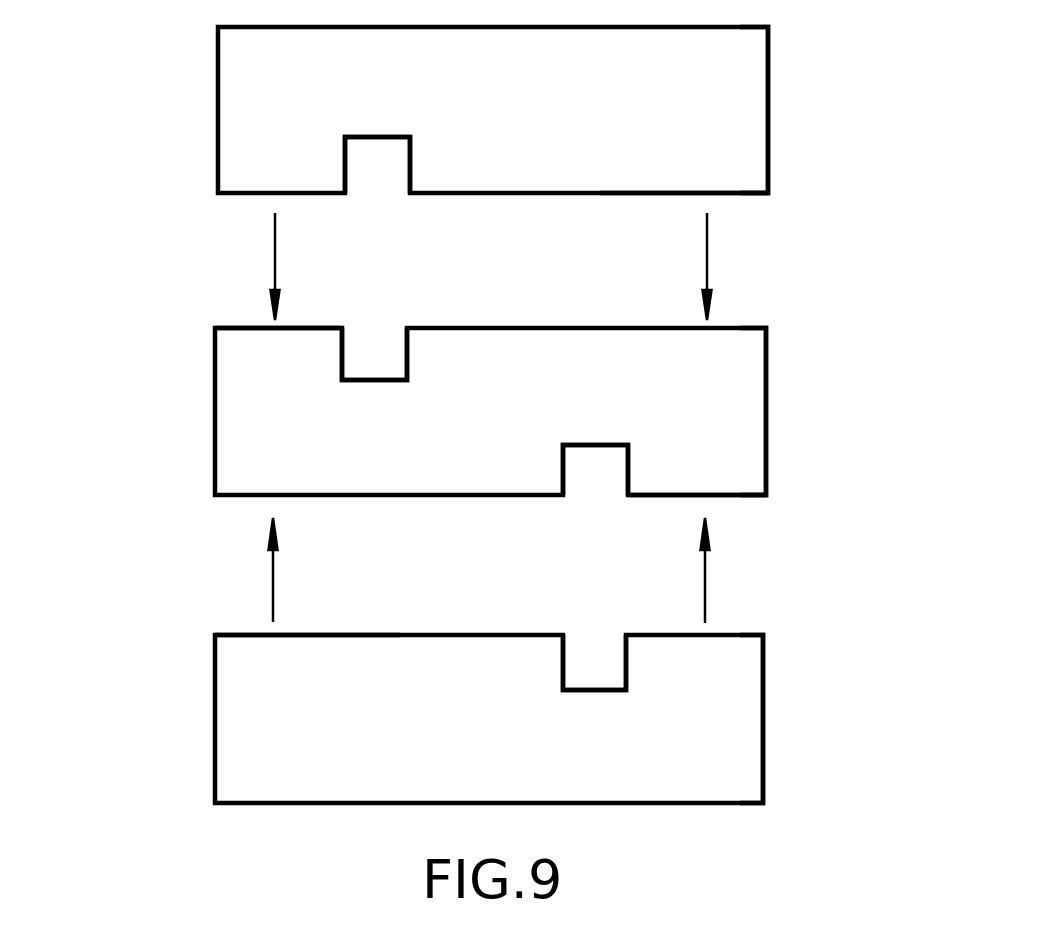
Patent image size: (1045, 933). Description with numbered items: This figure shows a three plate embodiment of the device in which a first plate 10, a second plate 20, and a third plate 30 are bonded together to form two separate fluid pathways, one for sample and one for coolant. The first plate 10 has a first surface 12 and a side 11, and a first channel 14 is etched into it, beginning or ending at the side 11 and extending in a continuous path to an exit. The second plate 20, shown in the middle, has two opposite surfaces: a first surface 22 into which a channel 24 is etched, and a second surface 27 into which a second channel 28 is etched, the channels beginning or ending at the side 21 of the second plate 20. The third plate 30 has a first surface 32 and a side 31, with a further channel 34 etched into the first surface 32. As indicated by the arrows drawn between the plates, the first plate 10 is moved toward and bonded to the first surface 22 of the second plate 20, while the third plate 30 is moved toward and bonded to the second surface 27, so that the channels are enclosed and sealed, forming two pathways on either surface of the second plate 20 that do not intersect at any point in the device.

The first plate 10 is at (218, 117).
The side of the first plate 11 is at (715, 110).
The first surface of the first plate 12 is at (710, 197).
The first channel 14 is at (397, 138).
The second plate 20 is at (218, 400).
The side of the second plate 21 is at (710, 420).
The first surface of the second plate 22 is at (265, 325).
The channel in the second plate 24 is at (367, 378).
The second surface of the second plate 27 is at (712, 497).
The second channel 28 is at (600, 443).
The third plate 30 is at (213, 728).
The side of the third plate 31 is at (708, 747).
The first surface of the third plate 32 is at (260, 633).
The channel in the third plate 34 is at (595, 688).